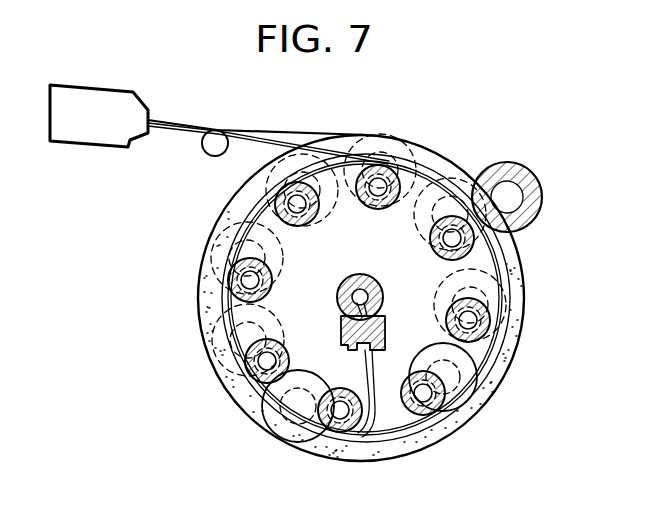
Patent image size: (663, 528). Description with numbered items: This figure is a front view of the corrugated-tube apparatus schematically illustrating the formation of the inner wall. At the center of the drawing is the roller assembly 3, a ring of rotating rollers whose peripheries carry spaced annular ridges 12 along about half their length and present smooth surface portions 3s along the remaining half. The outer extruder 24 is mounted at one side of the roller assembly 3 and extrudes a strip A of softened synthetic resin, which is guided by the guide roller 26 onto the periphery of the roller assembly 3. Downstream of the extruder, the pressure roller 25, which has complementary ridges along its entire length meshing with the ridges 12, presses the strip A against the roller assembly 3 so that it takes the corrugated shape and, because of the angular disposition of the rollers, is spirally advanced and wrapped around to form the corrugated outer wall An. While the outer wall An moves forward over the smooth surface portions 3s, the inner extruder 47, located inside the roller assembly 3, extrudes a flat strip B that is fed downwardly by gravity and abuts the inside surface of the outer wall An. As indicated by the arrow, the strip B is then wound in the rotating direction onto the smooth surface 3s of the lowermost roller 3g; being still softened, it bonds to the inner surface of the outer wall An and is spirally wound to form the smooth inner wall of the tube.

The outer extruder 24 is at (86, 137).
The guide roller 26 is at (203, 150).
The strip A is at (188, 121).
The pressure roller 25 is at (537, 215).
The annular ridges 12 is at (381, 149).
The strip B is at (257, 213).
The corrugated outer wall An is at (497, 358).
The smooth surface portions 3s is at (417, 182).
The inner extruder 47 is at (385, 297).
The lowermost roller 3g is at (333, 440).
The roller assembly 3 is at (362, 304).